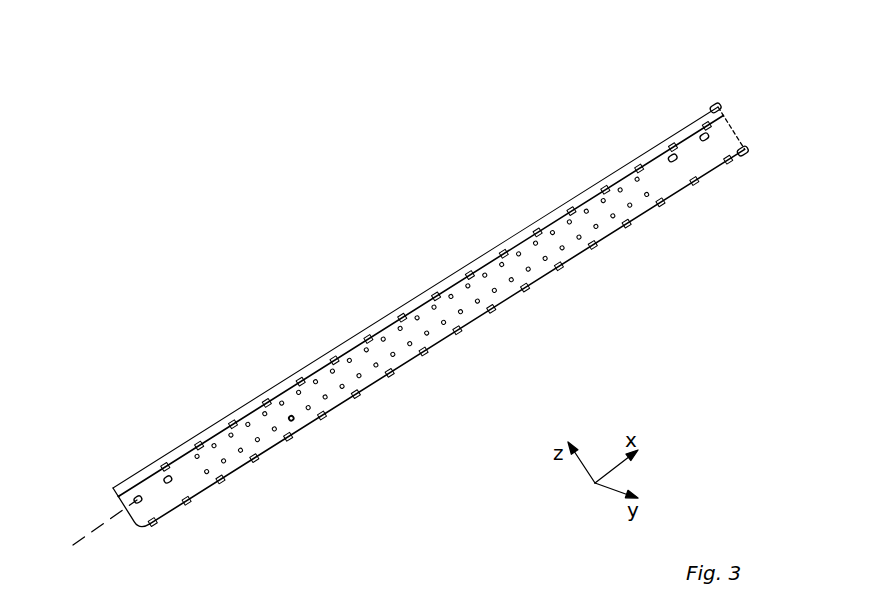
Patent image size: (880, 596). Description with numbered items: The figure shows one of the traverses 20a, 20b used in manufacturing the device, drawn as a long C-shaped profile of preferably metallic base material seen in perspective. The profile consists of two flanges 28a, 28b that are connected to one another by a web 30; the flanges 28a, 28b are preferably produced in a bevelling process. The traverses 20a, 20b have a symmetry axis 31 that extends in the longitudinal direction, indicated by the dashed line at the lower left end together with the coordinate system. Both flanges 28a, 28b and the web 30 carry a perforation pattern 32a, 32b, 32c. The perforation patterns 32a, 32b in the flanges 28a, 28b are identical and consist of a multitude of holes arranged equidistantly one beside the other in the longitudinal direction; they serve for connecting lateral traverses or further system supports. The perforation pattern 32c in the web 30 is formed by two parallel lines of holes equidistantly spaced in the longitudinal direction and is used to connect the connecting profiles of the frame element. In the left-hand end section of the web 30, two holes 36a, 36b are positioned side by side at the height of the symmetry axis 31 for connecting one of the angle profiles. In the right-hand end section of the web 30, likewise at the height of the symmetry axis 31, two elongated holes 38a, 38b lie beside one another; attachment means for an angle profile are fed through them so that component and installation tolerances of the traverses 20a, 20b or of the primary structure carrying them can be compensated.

The traverse 20a is at (86, 88).
The traverse 20b is at (135, 88).
The flange 28a is at (722, 94).
The flange 28b is at (746, 141).
The web 30 is at (727, 123).
The symmetry axis 31 is at (102, 525).
The perforation pattern 32a is at (334, 358).
The perforation pattern 32b is at (358, 396).
The perforation pattern 32c is at (293, 422).
The hole 36a is at (137, 498).
The hole 36b is at (167, 478).
The elongated hole 38a is at (706, 140).
The elongated hole 38b is at (674, 161).